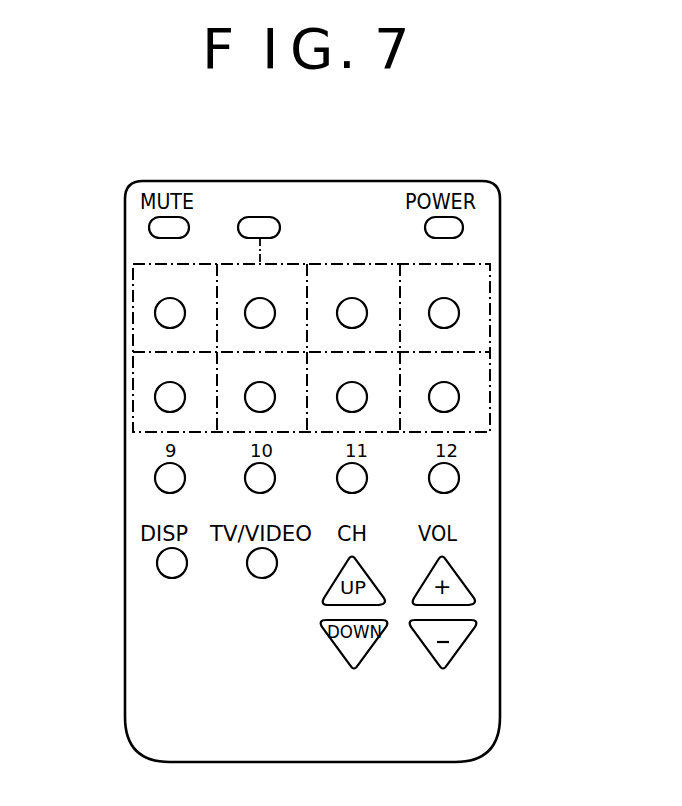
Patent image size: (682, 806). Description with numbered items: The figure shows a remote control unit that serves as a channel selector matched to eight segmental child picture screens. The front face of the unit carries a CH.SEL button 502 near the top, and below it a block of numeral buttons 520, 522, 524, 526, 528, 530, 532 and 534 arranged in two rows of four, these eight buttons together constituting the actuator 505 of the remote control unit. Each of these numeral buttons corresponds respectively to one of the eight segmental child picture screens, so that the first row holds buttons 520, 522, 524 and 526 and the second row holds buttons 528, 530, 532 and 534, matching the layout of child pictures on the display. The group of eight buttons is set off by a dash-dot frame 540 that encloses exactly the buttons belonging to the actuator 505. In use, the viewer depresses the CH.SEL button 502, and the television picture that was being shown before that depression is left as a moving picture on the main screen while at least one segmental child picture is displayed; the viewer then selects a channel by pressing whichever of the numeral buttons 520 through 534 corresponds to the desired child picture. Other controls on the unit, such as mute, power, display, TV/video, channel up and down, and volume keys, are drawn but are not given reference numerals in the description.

The actuator 505 is at (110, 237).
The CH.SEL button 502 is at (281, 229).
The numeral button 520 is at (155, 313).
The numeral button 522 is at (247, 321).
The numeral button 524 is at (367, 310).
The numeral button 526 is at (459, 313).
The numeral button 528 is at (155, 397).
The numeral button 530 is at (247, 406).
The numeral button 532 is at (367, 400).
The numeral button 534 is at (459, 393).
The channel button selection frame 540 is at (500, 347).